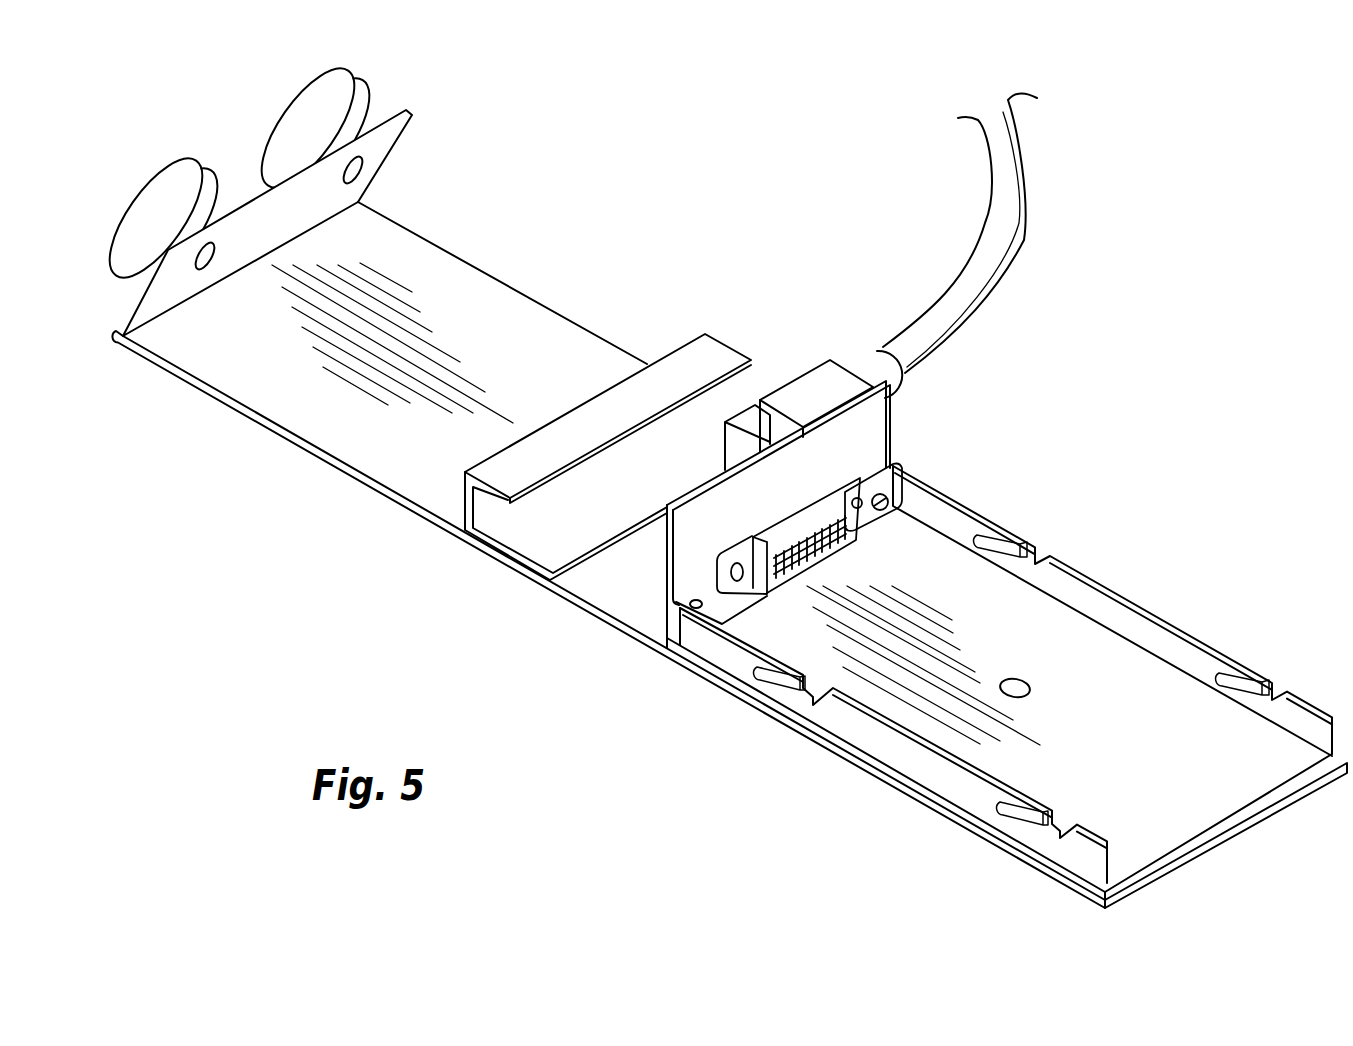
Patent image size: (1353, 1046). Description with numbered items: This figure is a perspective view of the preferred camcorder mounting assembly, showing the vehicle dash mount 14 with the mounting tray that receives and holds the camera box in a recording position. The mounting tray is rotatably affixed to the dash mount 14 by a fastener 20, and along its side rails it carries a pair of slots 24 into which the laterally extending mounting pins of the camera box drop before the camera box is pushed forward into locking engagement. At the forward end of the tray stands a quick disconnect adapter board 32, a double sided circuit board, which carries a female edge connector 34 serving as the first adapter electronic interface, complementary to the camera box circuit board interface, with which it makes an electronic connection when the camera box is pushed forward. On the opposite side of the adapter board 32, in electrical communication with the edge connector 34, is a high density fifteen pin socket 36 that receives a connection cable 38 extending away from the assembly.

The dash mount 14 is at (458, 313).
The fastener 20 is at (1017, 697).
The slots 24 is at (1028, 563).
The quick disconnect adapter board 32 is at (693, 522).
The female edge connector 34 is at (800, 523).
The high density 15 pin socket 36 is at (750, 423).
The connection cable 38 is at (977, 292).